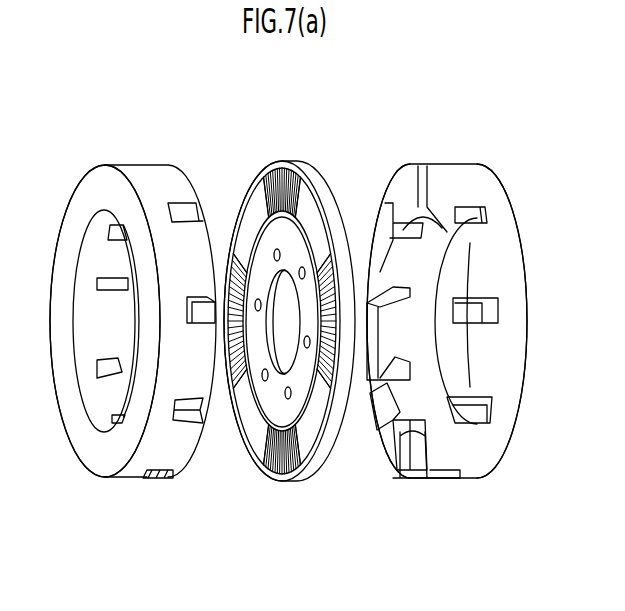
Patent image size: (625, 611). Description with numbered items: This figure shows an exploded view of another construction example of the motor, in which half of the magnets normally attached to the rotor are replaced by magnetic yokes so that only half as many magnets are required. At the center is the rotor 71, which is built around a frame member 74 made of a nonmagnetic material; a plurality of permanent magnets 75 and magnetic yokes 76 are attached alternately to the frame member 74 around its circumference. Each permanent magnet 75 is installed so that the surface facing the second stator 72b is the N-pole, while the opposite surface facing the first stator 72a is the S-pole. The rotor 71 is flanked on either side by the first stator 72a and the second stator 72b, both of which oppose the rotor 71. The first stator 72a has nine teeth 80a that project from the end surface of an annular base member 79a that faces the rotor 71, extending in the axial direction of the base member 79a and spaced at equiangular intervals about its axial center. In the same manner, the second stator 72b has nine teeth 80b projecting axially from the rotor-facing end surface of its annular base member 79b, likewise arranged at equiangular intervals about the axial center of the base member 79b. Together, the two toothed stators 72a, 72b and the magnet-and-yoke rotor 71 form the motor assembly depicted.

The rotor 71 is at (299, 153).
The first stator 72a is at (465, 153).
The second stator 72b is at (148, 148).
The frame member 74 is at (313, 472).
The permanent magnet 75 is at (320, 250).
The magnetic yoke 76 is at (260, 165).
The annular base member 79a is at (520, 364).
The annular base member 79b is at (83, 447).
The teeth 80a is at (470, 433).
The teeth 80b is at (186, 448).